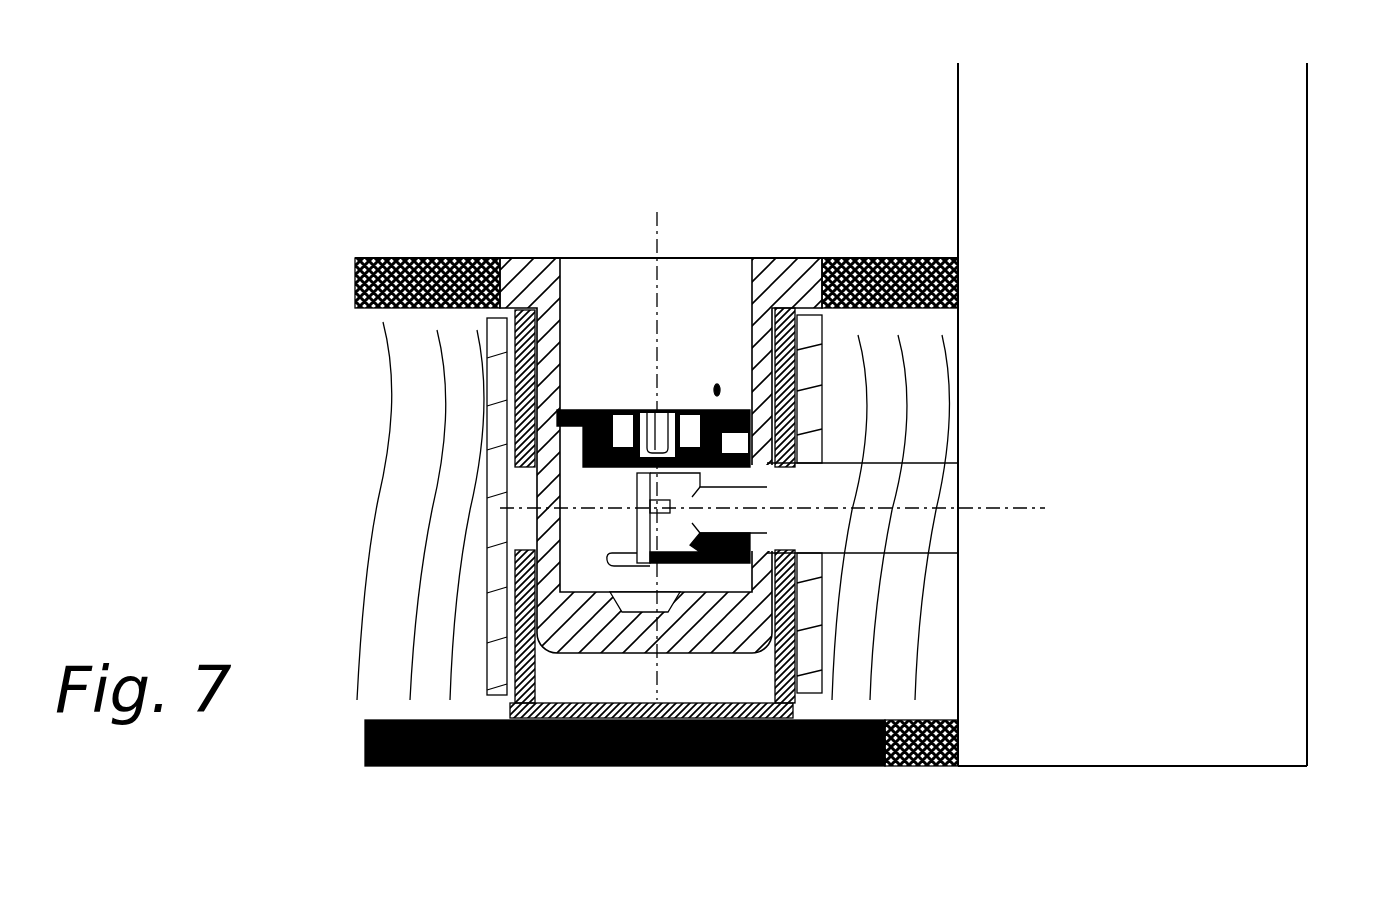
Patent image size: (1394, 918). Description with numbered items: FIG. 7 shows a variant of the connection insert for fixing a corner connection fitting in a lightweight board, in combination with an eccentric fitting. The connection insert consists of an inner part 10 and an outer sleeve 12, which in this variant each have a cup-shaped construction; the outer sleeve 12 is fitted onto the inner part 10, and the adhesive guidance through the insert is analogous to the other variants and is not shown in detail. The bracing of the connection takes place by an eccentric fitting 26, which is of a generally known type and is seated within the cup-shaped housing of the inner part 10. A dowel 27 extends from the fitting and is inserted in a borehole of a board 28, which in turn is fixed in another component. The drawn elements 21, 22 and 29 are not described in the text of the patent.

The housing 10 is at (542, 262).
The bottom plate 12 is at (510, 768).
The upper wall plate 21 is at (870, 258).
The lower wall plate 22 is at (883, 768).
The connecting element 26 is at (718, 375).
The shaft 27 is at (922, 487).
The wall insulation 28 is at (918, 370).
The door panel 29 is at (1262, 288).